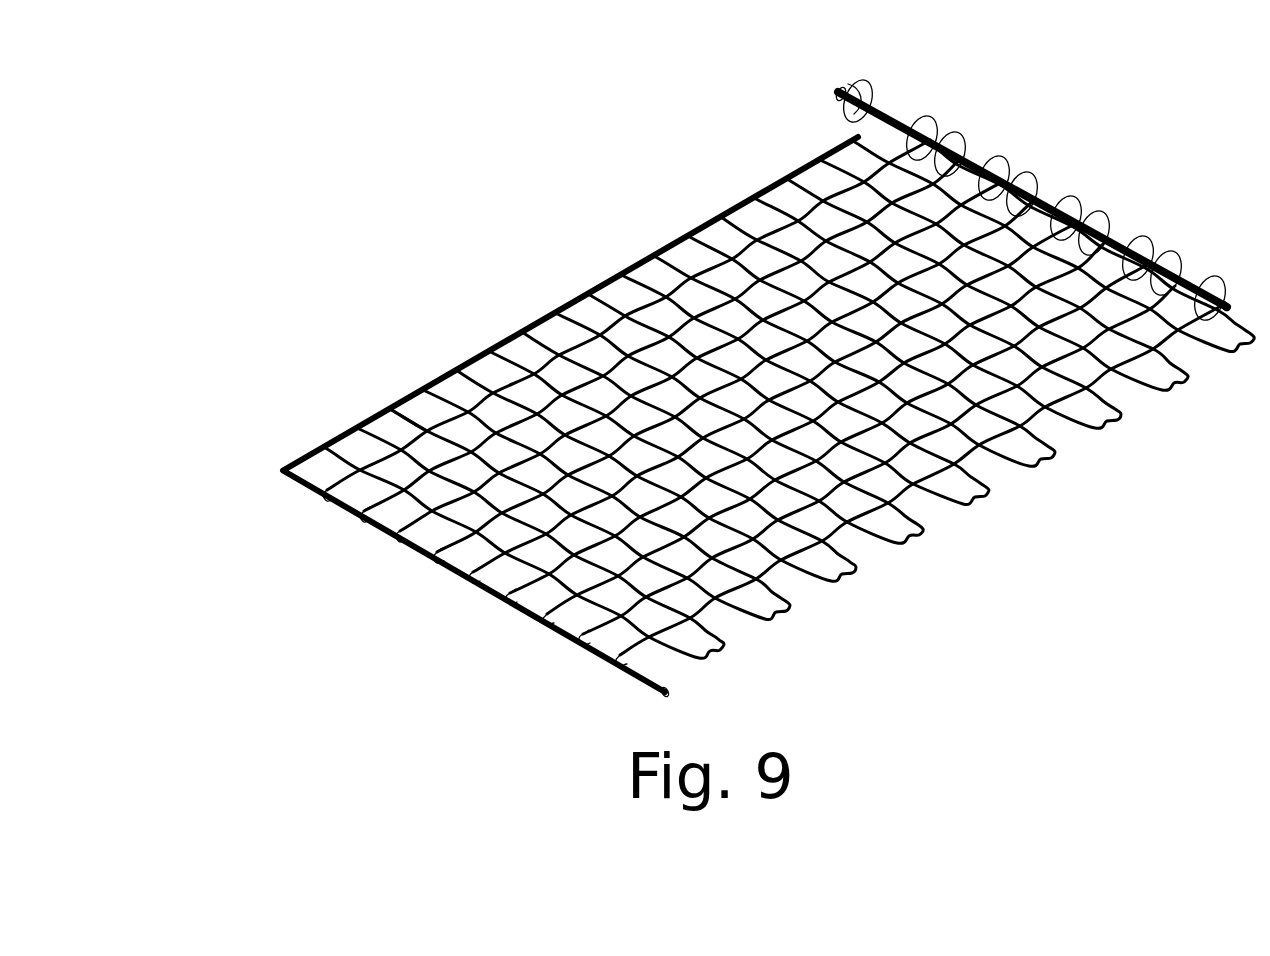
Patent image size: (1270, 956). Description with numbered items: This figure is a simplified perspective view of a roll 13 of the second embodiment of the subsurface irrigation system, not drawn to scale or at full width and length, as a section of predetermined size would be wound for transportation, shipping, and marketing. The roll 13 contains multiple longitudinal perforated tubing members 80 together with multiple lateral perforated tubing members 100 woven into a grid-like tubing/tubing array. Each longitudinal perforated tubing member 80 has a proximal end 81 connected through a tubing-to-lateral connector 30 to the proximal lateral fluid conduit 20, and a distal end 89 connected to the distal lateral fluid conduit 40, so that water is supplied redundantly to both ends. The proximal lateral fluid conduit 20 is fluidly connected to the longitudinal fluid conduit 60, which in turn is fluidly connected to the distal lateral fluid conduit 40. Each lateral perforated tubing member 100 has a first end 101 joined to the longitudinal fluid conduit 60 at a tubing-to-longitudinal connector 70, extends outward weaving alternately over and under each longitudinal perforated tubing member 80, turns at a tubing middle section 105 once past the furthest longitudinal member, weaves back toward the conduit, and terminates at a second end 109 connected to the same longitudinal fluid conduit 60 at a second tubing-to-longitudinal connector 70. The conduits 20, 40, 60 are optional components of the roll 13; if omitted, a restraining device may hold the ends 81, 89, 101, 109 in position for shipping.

The roll 13 is at (818, 75).
The proximal lateral fluid conduit 20 is at (1145, 260).
The tubing-to-lateral connector 30 is at (1072, 222).
The distal lateral fluid conduit 40 is at (335, 508).
The longitudinal fluid conduit 60 is at (536, 312).
The tubing-to-longitudinal connector 70 is at (393, 398).
The longitudinal perforated tubing member 80 is at (1003, 470).
The proximal end 81 is at (1128, 244).
The distal end 89 is at (528, 605).
The lateral perforated tubing member 100 is at (797, 617).
The first end 101 is at (437, 378).
The tubing middle section 105 is at (933, 490).
The second end 109 is at (418, 392).